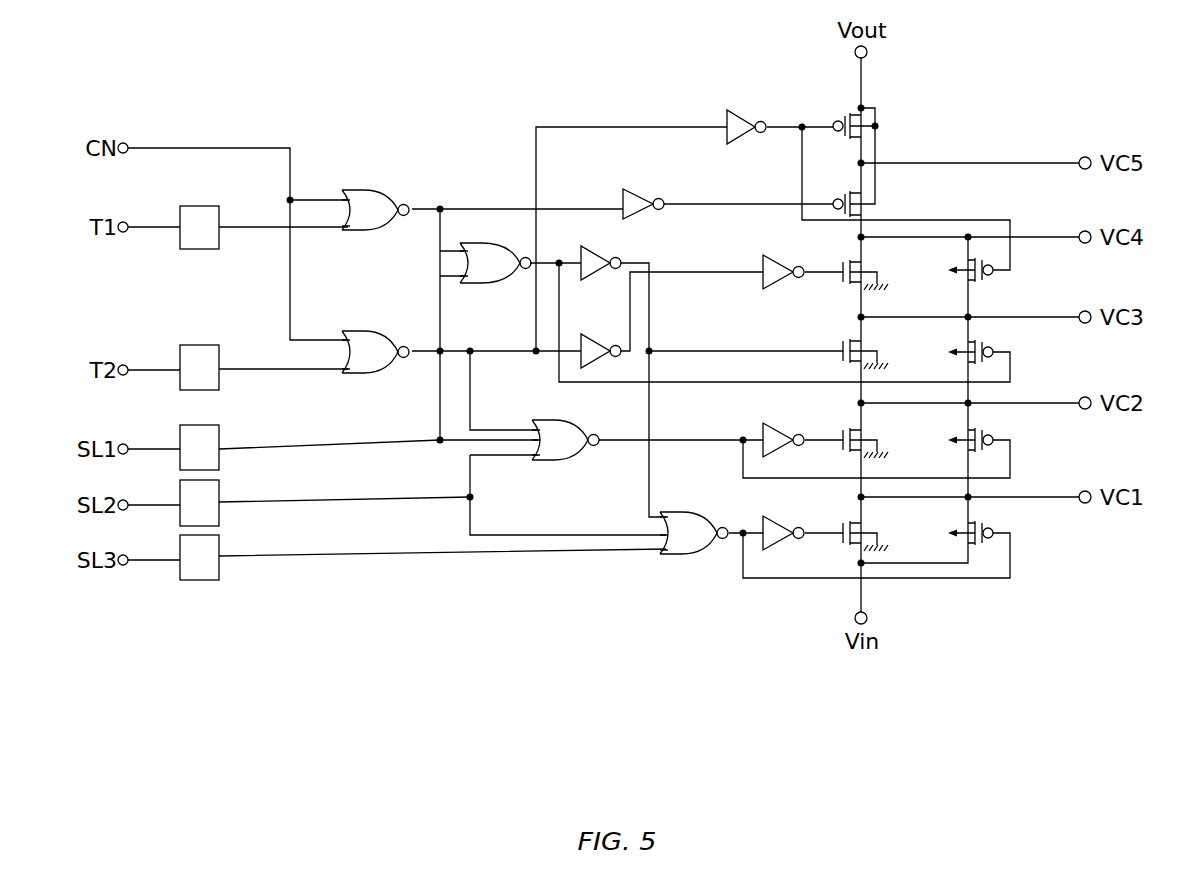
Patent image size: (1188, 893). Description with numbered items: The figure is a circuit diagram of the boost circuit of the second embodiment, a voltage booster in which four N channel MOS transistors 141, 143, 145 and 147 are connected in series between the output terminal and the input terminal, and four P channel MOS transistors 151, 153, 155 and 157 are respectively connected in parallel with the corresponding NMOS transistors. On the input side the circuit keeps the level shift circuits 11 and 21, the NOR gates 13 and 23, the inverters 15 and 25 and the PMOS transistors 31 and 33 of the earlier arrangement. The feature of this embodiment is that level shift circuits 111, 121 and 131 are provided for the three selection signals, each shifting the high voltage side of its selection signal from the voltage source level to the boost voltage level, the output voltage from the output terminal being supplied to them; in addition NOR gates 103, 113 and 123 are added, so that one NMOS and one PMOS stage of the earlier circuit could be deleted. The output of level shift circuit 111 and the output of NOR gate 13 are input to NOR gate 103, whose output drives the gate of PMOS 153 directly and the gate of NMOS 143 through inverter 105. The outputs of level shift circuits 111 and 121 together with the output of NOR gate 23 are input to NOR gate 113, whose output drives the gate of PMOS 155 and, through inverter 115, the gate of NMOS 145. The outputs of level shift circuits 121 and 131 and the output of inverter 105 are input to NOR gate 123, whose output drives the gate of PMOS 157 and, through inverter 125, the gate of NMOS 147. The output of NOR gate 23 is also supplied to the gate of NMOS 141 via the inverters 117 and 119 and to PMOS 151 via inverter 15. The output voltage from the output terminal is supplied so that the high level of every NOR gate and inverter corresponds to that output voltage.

The level shift circuit 11 is at (198, 206).
The NOR gate 13 is at (383, 190).
The inverter 15 is at (747, 109).
The level shift circuit 21 is at (203, 344).
The NOR gate 23 is at (383, 333).
The inverter 25 is at (637, 190).
The P channel MOS transistor 31 is at (848, 110).
The P channel MOS transistor 33 is at (848, 190).
The NOR gate 103 is at (497, 242).
The inverter 105 is at (593, 246).
The level shift circuit 111 is at (205, 425).
The NOR gate 113 is at (563, 422).
The inverter 115 is at (793, 425).
The inverter 117 is at (590, 334).
The inverter 119 is at (793, 260).
The level shift circuit 121 is at (220, 487).
The NOR gate 123 is at (690, 513).
The inverter 125 is at (793, 520).
The level shift circuit 131 is at (220, 545).
The N channel MOS transistor 141 is at (852, 285).
The N channel MOS transistor 143 is at (847, 338).
The N channel MOS transistor 145 is at (850, 450).
The N channel MOS transistor 147 is at (850, 543).
The P channel MOS transistor 151 is at (990, 285).
The P channel MOS transistor 153 is at (990, 343).
The P channel MOS transistor 155 is at (990, 430).
The P channel MOS transistor 157 is at (990, 523).